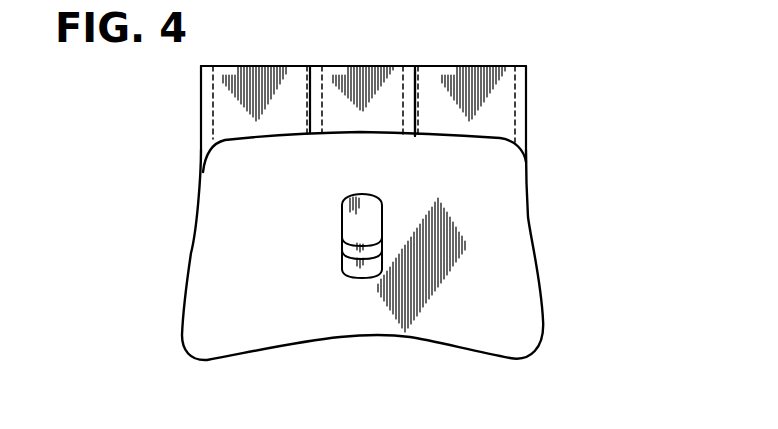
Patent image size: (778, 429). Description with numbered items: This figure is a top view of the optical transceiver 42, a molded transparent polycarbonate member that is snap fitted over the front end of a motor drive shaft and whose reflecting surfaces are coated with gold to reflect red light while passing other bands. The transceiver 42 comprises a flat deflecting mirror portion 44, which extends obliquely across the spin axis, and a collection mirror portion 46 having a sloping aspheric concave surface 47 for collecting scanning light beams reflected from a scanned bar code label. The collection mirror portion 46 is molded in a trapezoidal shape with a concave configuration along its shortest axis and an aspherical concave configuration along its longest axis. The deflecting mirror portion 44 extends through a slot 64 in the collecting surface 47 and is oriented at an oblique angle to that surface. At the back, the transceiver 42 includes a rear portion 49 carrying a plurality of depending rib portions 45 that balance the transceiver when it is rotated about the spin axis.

The optical transceiver 42 is at (299, 66).
The flat deflecting mirror portion 44 is at (343, 244).
The depending rib portions 45 is at (416, 85).
The collection mirror portion 46 is at (190, 250).
The sloping aspheric concave surface 47 is at (207, 210).
The rear portion 49 is at (527, 107).
The slot 64 is at (341, 262).